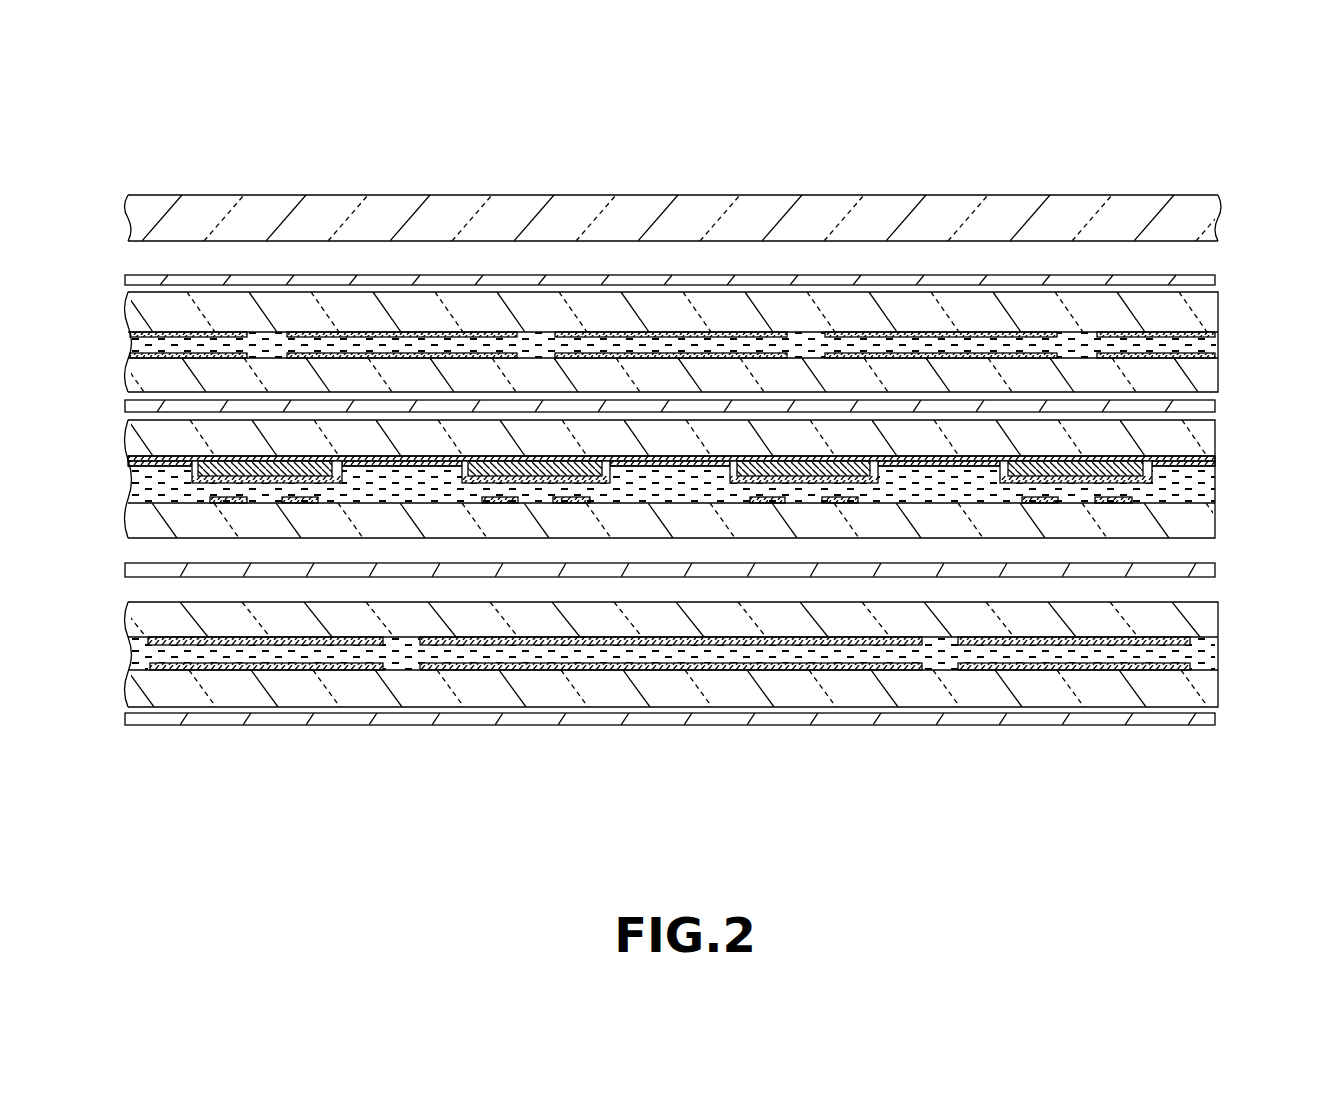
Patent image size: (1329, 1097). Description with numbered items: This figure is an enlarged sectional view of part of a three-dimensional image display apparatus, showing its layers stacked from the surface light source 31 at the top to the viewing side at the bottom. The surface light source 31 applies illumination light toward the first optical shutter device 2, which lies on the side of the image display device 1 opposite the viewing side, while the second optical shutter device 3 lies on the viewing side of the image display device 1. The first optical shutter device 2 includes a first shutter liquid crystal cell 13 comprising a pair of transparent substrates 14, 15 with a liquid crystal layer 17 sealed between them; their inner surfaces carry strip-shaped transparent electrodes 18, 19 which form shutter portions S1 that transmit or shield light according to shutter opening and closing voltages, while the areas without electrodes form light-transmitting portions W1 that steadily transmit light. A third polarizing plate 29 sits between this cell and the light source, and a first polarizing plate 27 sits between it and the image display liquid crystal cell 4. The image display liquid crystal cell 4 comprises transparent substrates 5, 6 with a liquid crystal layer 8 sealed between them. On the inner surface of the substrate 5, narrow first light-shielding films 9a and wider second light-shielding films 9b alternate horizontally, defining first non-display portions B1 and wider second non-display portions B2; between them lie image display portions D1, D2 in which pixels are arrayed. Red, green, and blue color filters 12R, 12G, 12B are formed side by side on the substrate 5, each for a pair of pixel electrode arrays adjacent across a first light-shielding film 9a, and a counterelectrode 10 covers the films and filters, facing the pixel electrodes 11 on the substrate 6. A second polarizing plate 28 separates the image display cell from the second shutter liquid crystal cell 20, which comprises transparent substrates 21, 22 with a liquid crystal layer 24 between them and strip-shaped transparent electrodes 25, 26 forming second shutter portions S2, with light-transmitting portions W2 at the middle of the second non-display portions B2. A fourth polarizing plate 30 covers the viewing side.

The image display device 1 is at (1225, 410).
The first optical shutter device 2 is at (118, 275).
The second optical shutter device 3 is at (118, 565).
The image display liquid crystal cell 4 is at (633, 475).
The transparent substrate 5 is at (150, 442).
The transparent substrate 6 is at (150, 516).
The liquid crystal layer 8 is at (150, 487).
The first light-shielding film 9a is at (273, 457).
The second light-shielding film 9b is at (425, 461).
The counterelectrode 10 is at (372, 466).
The pixel electrode 11 is at (228, 503).
The red color filter 12R is at (303, 462).
The green color filter 12G is at (582, 462).
The blue color filter 12B is at (800, 483).
The first shutter liquid crystal cell 13 is at (724, 268).
The transparent substrate 14 is at (1190, 322).
The transparent substrate 15 is at (1190, 385).
The liquid crystal layer 17 is at (712, 252).
The transparent electrode 18 is at (157, 330).
The transparent electrode 19 is at (213, 353).
The second shutter liquid crystal cell 20 is at (719, 703).
The transparent substrate 21 is at (1190, 630).
The transparent substrate 22 is at (1190, 692).
The liquid crystal layer 24 is at (1190, 660).
The transparent electrode 25 is at (180, 645).
The transparent electrode 26 is at (327, 670).
The first polarizing plate 27 is at (1205, 407).
The second polarizing plate 28 is at (1200, 577).
The third polarizing plate 29 is at (1190, 281).
The fourth polarizing plate 30 is at (1195, 725).
The surface light source 31 is at (1195, 222).
The light-transmitting portion W1 is at (248, 456).
The shutter portion S1 is at (518, 456).
The second non-display portion B2 is at (590, 456).
The image display portion D1 is at (753, 503).
The first non-display portion B1 is at (789, 503).
The image display portion D2 is at (825, 503).
The light-transmitting portion W2 is at (383, 670).
The second shutter portion S2 is at (922, 670).